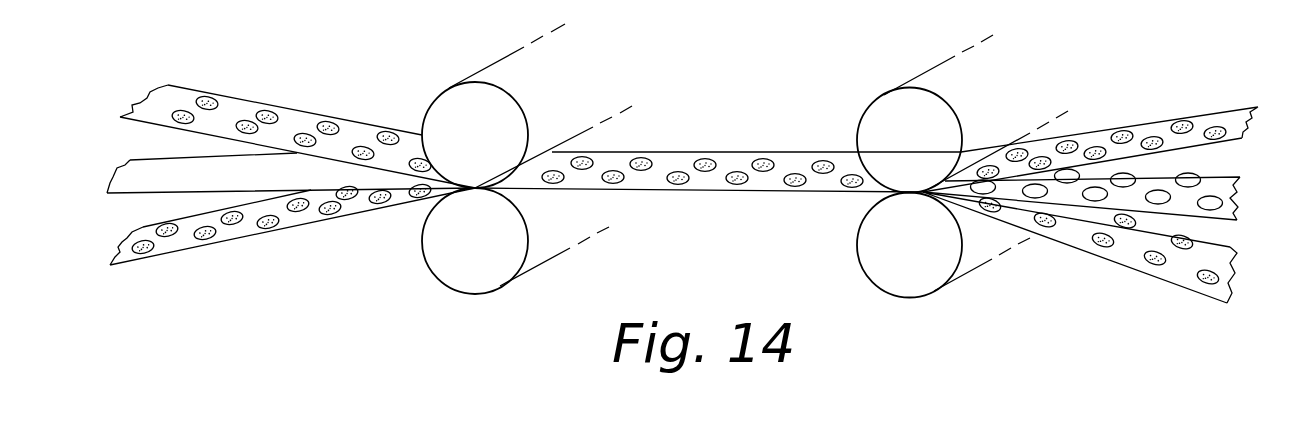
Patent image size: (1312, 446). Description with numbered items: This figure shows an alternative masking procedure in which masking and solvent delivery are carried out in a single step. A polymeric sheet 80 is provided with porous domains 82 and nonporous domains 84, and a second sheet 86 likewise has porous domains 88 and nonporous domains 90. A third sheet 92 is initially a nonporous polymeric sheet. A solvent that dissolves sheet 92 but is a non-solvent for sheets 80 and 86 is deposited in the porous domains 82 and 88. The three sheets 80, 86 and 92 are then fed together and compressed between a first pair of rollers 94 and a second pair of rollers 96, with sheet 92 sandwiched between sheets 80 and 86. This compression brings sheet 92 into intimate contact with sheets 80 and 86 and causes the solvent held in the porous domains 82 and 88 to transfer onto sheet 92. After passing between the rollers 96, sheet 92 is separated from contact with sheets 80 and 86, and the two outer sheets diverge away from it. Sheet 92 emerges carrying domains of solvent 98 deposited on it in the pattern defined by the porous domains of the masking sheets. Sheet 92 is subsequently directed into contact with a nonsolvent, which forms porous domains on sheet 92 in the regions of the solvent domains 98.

The polymeric sheet 80 is at (689, 108).
The porous domains 82 is at (328, 125).
The nonporous domains 84 is at (348, 143).
The sheet 86 is at (673, 257).
The porous domains 88 is at (256, 230).
The nonporous domains 90 is at (300, 215).
The nonporous polymeric sheet 92 is at (697, 189).
The rollers 94 is at (510, 237).
The rollers 96 is at (873, 237).
The domains of solvent 98 is at (1155, 194).